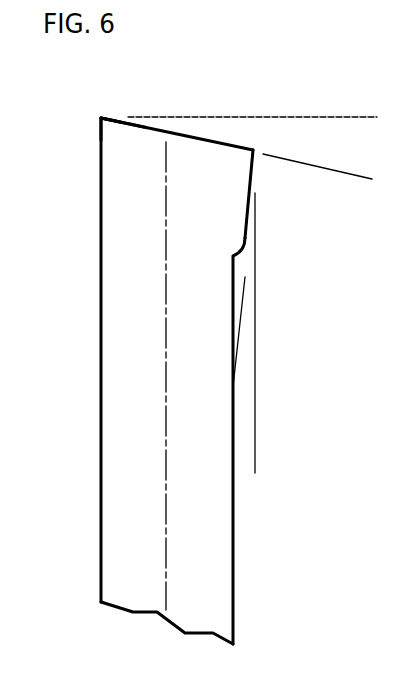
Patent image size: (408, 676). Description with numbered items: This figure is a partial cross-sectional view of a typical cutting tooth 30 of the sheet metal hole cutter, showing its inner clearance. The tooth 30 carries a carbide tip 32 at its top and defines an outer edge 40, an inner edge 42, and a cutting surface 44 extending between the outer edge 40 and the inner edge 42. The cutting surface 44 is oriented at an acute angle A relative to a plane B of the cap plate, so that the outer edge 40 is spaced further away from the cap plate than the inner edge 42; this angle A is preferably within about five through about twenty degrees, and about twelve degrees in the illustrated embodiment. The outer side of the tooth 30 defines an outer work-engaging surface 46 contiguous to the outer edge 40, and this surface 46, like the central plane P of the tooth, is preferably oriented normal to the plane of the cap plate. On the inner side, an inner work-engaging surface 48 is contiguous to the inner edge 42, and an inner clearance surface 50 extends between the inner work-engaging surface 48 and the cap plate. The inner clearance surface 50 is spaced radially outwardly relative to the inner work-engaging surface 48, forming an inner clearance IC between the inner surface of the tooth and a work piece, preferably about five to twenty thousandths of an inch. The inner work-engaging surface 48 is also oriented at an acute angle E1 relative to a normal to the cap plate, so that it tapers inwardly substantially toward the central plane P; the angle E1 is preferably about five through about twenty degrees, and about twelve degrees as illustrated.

The tooth 30 is at (93, 228).
The carbide tip 32 is at (128, 121).
The outer edge 40 is at (100, 118).
The inner edge 42 is at (255, 148).
The cutting surface 44 is at (167, 132).
The outer work-engaging surface 46 is at (100, 148).
The inner work-engaging surface 48 is at (250, 212).
The inner clearance surface 50 is at (233, 270).
The acute angle A is at (368, 119).
The plane of the cap plate B is at (315, 117).
The central plane of the tooth P is at (165, 402).
The acute angle E1 is at (190, 357).
The inner clearance IC is at (183, 469).